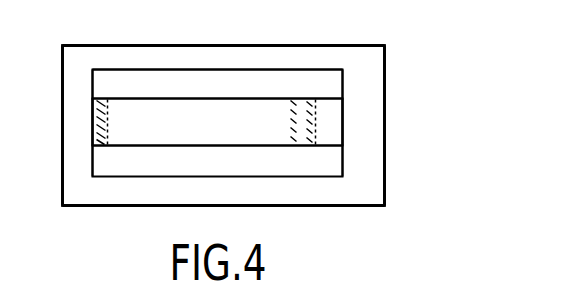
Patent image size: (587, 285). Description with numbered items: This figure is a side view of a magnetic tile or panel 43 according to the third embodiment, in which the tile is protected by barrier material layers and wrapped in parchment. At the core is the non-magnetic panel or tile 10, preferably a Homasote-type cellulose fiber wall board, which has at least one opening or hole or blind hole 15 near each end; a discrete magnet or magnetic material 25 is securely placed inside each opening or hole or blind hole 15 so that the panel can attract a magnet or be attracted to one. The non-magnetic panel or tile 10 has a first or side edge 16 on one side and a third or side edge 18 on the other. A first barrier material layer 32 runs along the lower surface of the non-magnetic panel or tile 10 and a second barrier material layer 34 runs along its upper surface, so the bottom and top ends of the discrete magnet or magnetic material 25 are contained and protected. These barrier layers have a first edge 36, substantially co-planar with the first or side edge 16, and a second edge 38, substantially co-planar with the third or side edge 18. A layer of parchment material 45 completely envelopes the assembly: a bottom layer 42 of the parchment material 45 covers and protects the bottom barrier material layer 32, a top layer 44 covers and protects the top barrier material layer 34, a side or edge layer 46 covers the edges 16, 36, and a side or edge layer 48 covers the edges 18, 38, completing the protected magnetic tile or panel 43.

The magnetic tile or panel 43 is at (286, 27).
The second edge 38 is at (93, 88).
The parchment material 45 is at (145, 60).
The top layer of parchment material 44 is at (205, 60).
The bottom layer of parchment material 42 is at (194, 207).
The side or edge layer of parchment material 46 is at (373, 165).
The second barrier material layer 34 is at (217, 93).
The non-magnetic panel or tile 10 is at (217, 138).
The first barrier material layer 32 is at (217, 170).
The first edge 36 is at (343, 86).
The first or side edge 16 is at (343, 130).
The third or side edge 18 is at (93, 125).
The side or edge layer of parchment material 48 is at (77, 143).
The opening or hole or blind hole 15 is at (114, 115).
The discrete magnet or magnetic material 25 is at (111, 138).